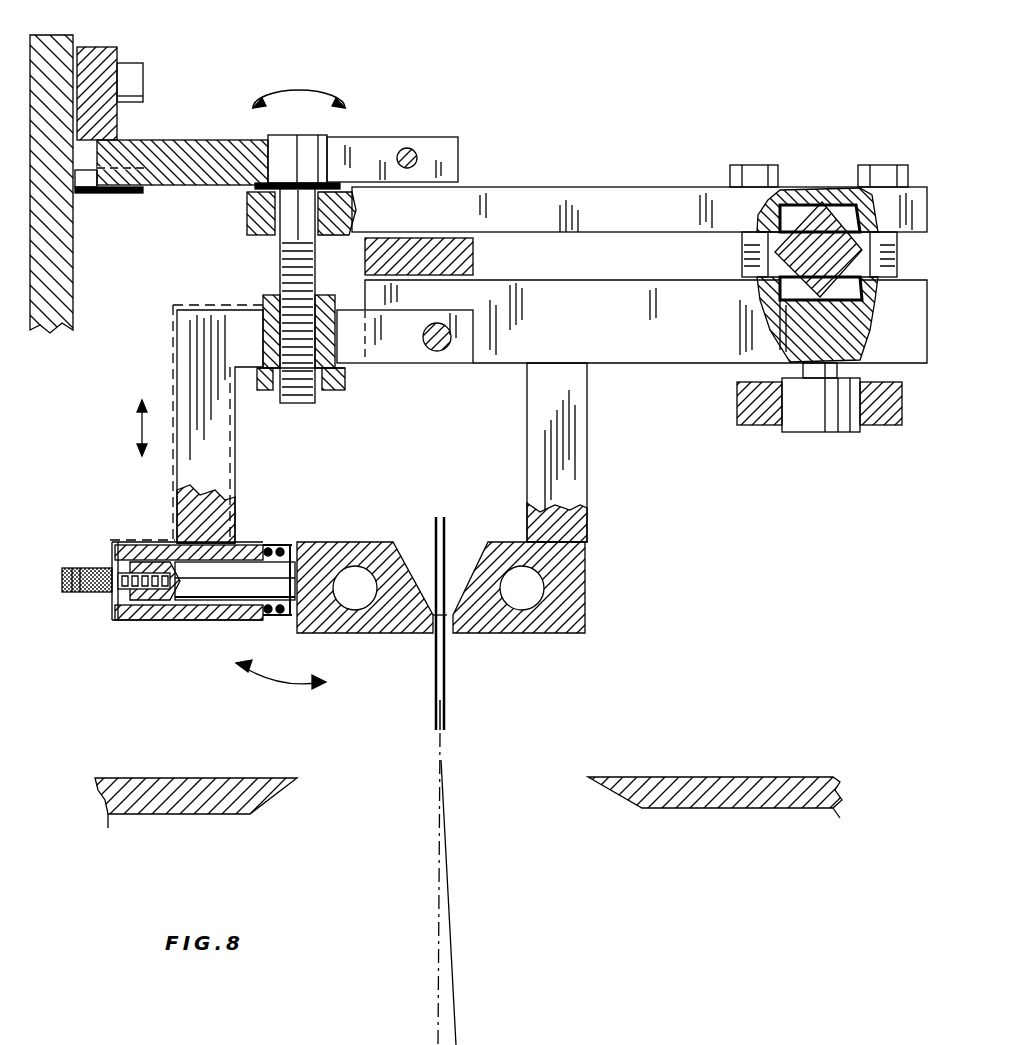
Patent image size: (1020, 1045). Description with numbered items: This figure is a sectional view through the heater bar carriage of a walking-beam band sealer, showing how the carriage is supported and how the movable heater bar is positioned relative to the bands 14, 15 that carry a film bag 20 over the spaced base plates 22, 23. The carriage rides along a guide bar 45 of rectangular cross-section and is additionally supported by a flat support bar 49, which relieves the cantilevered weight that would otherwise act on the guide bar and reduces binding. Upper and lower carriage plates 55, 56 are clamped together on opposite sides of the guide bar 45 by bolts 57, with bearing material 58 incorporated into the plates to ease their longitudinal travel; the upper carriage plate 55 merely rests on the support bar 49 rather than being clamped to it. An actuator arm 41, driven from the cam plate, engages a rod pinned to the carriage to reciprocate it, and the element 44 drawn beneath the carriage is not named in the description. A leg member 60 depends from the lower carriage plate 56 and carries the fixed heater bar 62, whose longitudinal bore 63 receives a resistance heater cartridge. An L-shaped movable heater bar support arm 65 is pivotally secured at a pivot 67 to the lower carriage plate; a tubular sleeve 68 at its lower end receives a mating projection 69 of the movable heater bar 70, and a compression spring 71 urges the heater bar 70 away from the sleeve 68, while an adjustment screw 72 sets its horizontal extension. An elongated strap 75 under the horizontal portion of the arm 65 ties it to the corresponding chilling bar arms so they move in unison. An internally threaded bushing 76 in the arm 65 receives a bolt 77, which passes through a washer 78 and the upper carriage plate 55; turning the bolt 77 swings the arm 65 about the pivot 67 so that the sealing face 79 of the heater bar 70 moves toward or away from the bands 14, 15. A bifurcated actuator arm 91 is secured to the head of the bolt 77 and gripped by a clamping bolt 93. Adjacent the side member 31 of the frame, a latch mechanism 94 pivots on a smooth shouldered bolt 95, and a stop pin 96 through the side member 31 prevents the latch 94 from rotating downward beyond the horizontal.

The band 14 is at (448, 718).
The band 15 is at (437, 727).
The film bag 20 is at (438, 996).
The base plate 22 is at (163, 790).
The base plate 23 is at (745, 793).
The side member 31 is at (75, 258).
The actuator arm 41 is at (745, 410).
The nut 44 is at (820, 432).
The guide bar 45 is at (862, 252).
The support bar 49 is at (473, 258).
The upper carriage plate 55 is at (672, 226).
The lower carriage plate 56 is at (635, 322).
The bolt 57 is at (752, 165).
The bearing material 58 is at (815, 188).
The leg member 60 is at (588, 450).
The fixed heater bar 62 is at (587, 617).
The longitudinal bore 63 is at (540, 585).
The L-shaped movable heater bar support arm 65 is at (178, 352).
The pivot 67 is at (440, 350).
The tubular sleeve 68 is at (157, 620).
The mating projection 69 is at (235, 590).
The movable heater bar 70 is at (380, 633).
The spring 71 is at (270, 548).
The adjustment screw 72 is at (92, 595).
The elongated strap 75 is at (343, 380).
The internally threaded bushing 76 is at (264, 298).
The bolt 77 is at (295, 238).
The washer 78 is at (255, 188).
The sealing face 79 is at (432, 640).
The bifurcated actuator arm 91 is at (370, 147).
The clamping bolt 93 is at (413, 152).
The latch mechanism 94 is at (117, 128).
The smooth shouldered bolt 95 is at (143, 76).
The stop pin 96 is at (118, 193).